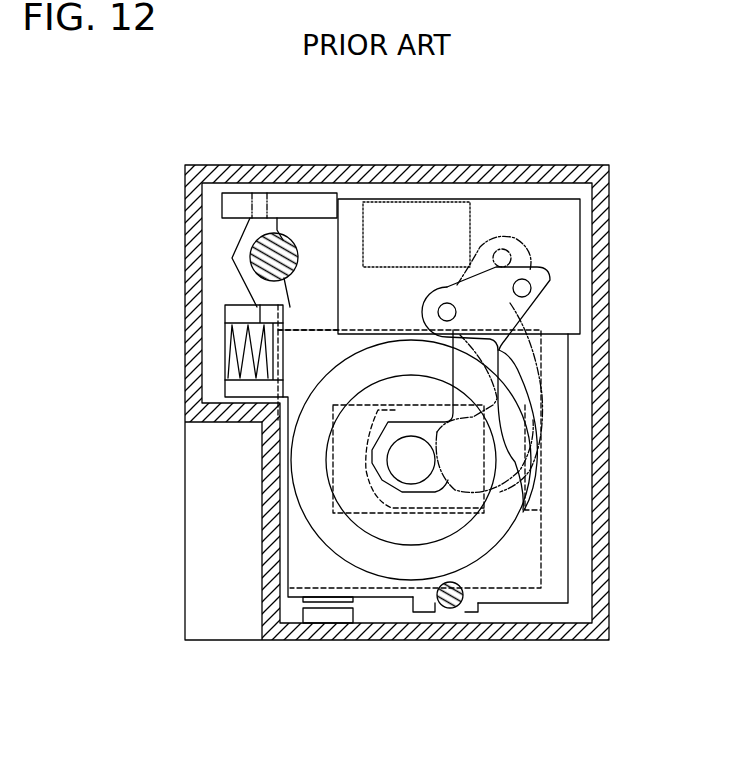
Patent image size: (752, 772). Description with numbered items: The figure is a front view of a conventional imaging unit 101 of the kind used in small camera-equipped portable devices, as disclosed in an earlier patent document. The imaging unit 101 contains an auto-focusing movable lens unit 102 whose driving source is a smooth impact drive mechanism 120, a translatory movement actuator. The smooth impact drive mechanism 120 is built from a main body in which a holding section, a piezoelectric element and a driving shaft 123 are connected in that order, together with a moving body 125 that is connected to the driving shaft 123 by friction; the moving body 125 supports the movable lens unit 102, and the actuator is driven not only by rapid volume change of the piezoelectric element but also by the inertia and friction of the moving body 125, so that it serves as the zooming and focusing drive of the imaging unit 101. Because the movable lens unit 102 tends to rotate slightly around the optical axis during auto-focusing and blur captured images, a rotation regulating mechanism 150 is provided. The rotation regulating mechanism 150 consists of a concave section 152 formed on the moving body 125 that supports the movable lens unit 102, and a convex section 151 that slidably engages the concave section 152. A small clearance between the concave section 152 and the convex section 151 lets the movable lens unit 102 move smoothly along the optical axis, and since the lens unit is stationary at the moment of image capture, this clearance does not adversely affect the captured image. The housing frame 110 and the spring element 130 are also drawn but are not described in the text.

The imaging unit 101 is at (391, 145).
The housing 110 is at (296, 162).
The smooth impact drive mechanism 120 is at (213, 253).
The driving shaft 123 is at (255, 238).
The spring 130 is at (238, 278).
The moving body 125 is at (577, 483).
The movable lens unit 102 is at (353, 556).
The rotation regulating mechanism 150 is at (447, 652).
The convex section 151 is at (443, 610).
The concave section 152 is at (460, 610).